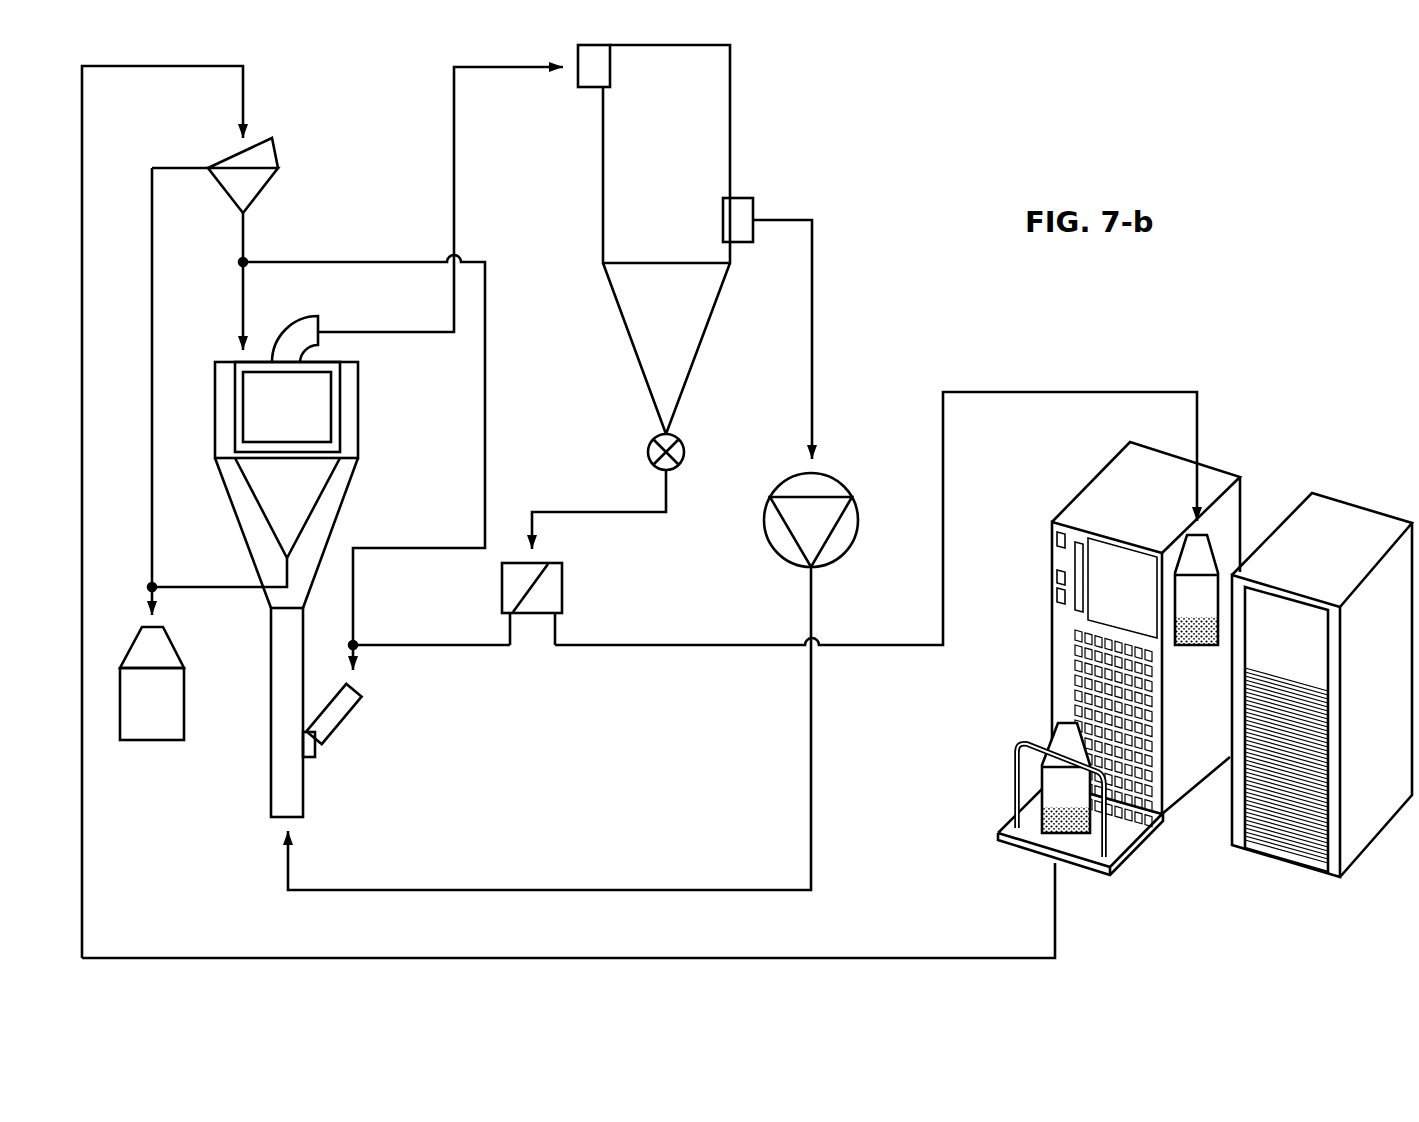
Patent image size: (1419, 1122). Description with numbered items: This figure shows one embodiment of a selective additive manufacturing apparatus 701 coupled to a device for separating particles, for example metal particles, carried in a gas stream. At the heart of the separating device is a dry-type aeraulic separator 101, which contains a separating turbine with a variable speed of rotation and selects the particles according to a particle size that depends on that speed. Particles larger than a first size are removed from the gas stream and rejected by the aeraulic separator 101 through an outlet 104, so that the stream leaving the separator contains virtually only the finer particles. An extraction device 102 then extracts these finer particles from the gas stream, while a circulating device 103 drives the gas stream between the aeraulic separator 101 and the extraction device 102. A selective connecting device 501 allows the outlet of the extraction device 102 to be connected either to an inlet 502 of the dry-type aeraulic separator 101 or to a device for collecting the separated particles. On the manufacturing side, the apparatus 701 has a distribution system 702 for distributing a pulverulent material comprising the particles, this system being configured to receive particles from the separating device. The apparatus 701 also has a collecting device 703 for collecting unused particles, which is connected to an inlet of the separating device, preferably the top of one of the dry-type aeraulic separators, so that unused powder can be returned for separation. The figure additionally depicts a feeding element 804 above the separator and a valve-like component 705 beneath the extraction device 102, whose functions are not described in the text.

The feeder hopper 804 is at (296, 163).
The dry-type aeraulic separator 101 is at (358, 523).
The outlet 104 is at (200, 703).
The inlet of the dry-type aeraulic separator 502 is at (351, 727).
The extraction device 102 is at (568, 208).
The valve 705 is at (694, 452).
The selective connecting device 501 is at (578, 589).
The gas stream circulating device 103 is at (745, 528).
The selective additive manufacturing apparatus 701 is at (1027, 570).
The distribution system 702 is at (1224, 552).
The collecting device 703 is at (1033, 782).